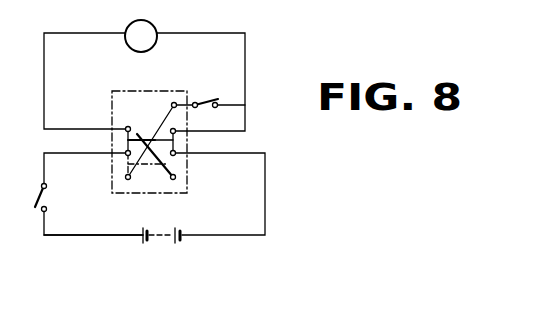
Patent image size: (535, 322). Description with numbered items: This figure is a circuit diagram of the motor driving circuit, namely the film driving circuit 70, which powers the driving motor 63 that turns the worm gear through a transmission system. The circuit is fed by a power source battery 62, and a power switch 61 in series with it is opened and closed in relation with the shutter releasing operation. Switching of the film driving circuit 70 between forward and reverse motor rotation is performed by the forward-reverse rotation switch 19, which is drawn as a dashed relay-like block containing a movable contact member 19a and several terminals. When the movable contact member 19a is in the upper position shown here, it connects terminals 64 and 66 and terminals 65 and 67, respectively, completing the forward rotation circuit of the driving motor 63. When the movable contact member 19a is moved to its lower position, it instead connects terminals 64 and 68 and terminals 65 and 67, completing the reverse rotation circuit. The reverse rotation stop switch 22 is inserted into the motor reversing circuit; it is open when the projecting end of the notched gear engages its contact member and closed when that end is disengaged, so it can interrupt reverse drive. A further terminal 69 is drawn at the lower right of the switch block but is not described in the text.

The forward-reverse rotation switch 19 is at (171, 90).
The movable contact member 19a is at (164, 149).
The reverse rotation stop switch 22 is at (218, 99).
The power switch 61 is at (40, 186).
The power source battery 62 is at (143, 246).
The driving motor 63 is at (157, 32).
The terminal 64 is at (126, 152).
The terminal 65 is at (176, 154).
The terminal 66 is at (129, 126).
The terminal 67 is at (176, 129).
The terminal 68 is at (126, 177).
The relay contact 69 is at (176, 179).
The film driving circuit 70 is at (80, 243).